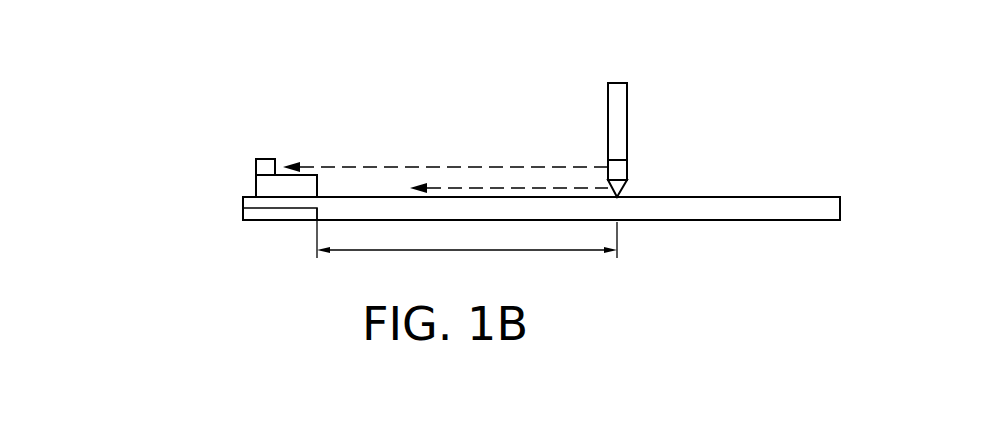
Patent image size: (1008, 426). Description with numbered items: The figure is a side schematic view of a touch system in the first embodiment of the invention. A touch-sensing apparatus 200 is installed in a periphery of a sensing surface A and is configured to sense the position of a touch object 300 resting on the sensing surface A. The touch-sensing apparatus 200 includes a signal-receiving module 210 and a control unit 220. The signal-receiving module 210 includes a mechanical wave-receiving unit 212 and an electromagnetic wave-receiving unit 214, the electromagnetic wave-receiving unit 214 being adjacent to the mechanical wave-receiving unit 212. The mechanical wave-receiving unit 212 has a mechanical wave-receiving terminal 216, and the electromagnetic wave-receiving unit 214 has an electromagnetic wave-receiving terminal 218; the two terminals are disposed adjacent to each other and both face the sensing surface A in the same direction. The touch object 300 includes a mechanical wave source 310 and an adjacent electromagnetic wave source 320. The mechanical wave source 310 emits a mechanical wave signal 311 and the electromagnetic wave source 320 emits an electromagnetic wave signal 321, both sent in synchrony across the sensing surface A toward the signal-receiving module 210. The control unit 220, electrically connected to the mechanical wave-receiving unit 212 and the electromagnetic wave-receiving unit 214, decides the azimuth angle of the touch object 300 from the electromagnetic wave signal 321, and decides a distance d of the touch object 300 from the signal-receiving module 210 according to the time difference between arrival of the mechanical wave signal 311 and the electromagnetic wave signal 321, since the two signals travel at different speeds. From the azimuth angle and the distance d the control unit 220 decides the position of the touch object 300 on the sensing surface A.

The touch-sensing apparatus 200 is at (100, 158).
The signal-receiving module 210 is at (157, 140).
The mechanical wave-receiving unit 212 is at (256, 167).
The electromagnetic wave-receiving unit 214 is at (256, 190).
The mechanical wave-receiving terminal 216 is at (289, 155).
The electromagnetic wave-receiving terminal 218 is at (322, 176).
The control unit 220 is at (243, 203).
The touch object 300 is at (651, 105).
The mechanical wave source 310 is at (621, 170).
The electromagnetic wave source 320 is at (627, 188).
The mechanical wave signal 311 is at (417, 165).
The electromagnetic wave signal 321 is at (540, 186).
The sensing surface A is at (768, 194).
The distance d is at (467, 233).